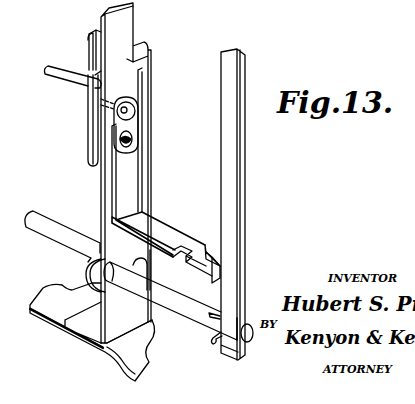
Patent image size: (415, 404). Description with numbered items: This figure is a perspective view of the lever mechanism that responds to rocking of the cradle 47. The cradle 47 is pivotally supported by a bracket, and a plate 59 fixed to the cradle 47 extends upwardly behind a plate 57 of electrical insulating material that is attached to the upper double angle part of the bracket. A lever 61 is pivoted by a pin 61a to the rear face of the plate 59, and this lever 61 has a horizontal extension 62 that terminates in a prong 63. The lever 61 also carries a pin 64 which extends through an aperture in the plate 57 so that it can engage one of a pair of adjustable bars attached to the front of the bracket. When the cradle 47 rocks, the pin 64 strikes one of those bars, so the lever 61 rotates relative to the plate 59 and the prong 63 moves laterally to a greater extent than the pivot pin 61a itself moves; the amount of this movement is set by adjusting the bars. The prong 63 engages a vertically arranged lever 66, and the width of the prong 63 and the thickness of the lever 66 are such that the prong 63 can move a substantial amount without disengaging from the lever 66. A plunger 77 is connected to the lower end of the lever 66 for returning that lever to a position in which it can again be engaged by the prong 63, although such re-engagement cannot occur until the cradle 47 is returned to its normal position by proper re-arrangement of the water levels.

The cradle 47 is at (103, 352).
The plate of electrical insulating material 57 is at (87, 148).
The plate 59 is at (92, 277).
The lever 61 is at (150, 213).
The pin 61a is at (133, 139).
The horizontal extension 62 is at (175, 245).
The prong 63 is at (210, 258).
The pin 64 is at (75, 85).
The vertically arranged lever 66 is at (237, 192).
The plunger 77 is at (53, 232).